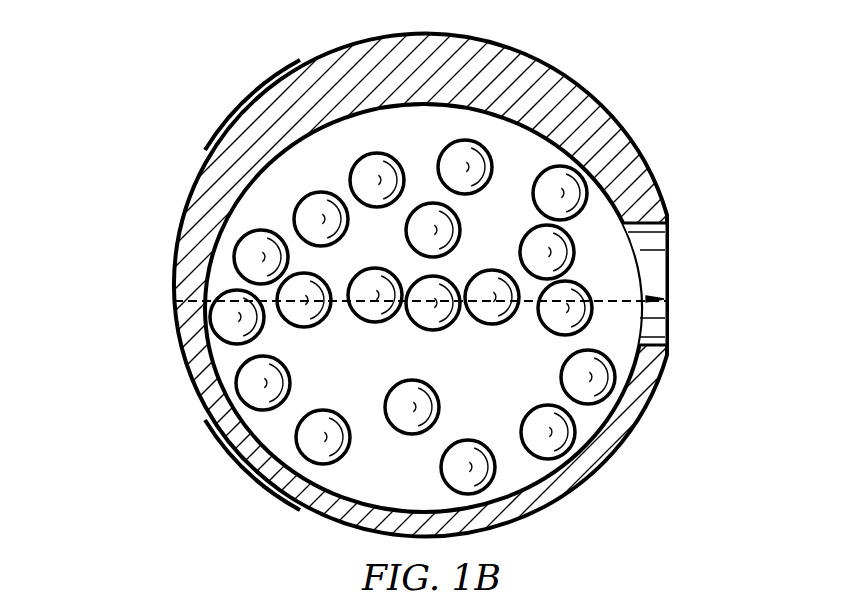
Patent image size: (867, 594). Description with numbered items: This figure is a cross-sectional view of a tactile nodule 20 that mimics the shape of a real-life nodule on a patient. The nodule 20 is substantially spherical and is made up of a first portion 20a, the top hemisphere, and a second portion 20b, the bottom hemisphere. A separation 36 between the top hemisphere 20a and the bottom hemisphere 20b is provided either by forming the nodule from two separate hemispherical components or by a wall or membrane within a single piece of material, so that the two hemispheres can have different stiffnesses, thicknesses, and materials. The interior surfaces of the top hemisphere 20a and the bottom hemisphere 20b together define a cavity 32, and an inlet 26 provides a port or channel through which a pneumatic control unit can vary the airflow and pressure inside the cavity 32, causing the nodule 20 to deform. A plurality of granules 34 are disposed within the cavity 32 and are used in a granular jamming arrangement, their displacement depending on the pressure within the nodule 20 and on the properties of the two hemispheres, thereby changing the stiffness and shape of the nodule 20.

The tactile nodule 20 is at (599, 97).
The first portion (top hemisphere) 20a is at (205, 203).
The second portion (bottom hemisphere) 20b is at (213, 433).
The inlet 26 is at (668, 280).
The separation 36 is at (666, 301).
The plurality of granules 34 is at (471, 190).
The cavity 32 is at (372, 489).